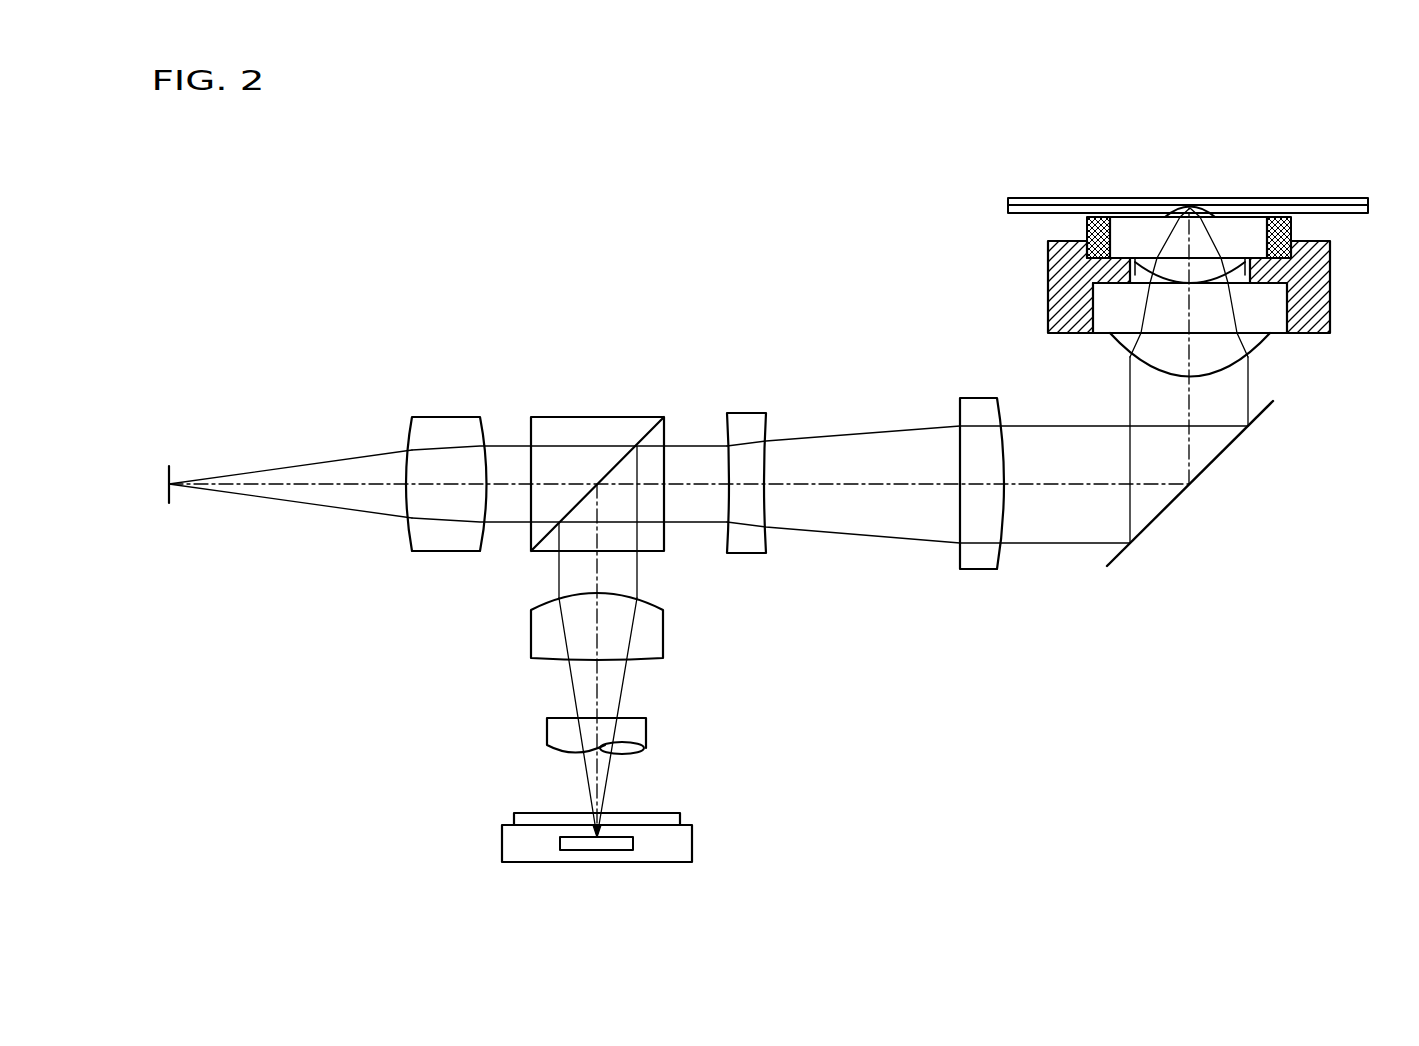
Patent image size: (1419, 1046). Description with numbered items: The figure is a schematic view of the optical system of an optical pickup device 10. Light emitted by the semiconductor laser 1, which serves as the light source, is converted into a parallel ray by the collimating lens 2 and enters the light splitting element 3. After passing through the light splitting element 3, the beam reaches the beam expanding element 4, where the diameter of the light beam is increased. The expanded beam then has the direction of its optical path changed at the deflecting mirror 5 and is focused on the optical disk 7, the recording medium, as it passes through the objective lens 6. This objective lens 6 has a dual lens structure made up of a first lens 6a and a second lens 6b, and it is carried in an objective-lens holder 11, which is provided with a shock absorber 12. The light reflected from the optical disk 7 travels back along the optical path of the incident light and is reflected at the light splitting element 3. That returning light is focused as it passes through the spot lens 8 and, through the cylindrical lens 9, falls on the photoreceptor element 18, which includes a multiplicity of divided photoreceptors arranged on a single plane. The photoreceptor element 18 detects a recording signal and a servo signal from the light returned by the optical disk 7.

The semiconductor laser 1 is at (169, 474).
The collimating lens 2 is at (446, 424).
The light splitting element 3 is at (588, 426).
The beam expanding element 4 is at (1007, 390).
The deflecting mirror 5 is at (1160, 512).
The objective lens 6 is at (1190, 232).
The first lens 6a is at (1155, 230).
The second lens 6b is at (1258, 298).
The optical disk 7 is at (1040, 198).
The spot lens 8 is at (654, 637).
The cylindrical lens 9 is at (640, 732).
The optical pickup device 10 is at (704, 283).
The objective-lens holder 11 is at (1062, 305).
The shock absorber 12 is at (1099, 220).
The photoreceptor element 18 is at (607, 846).